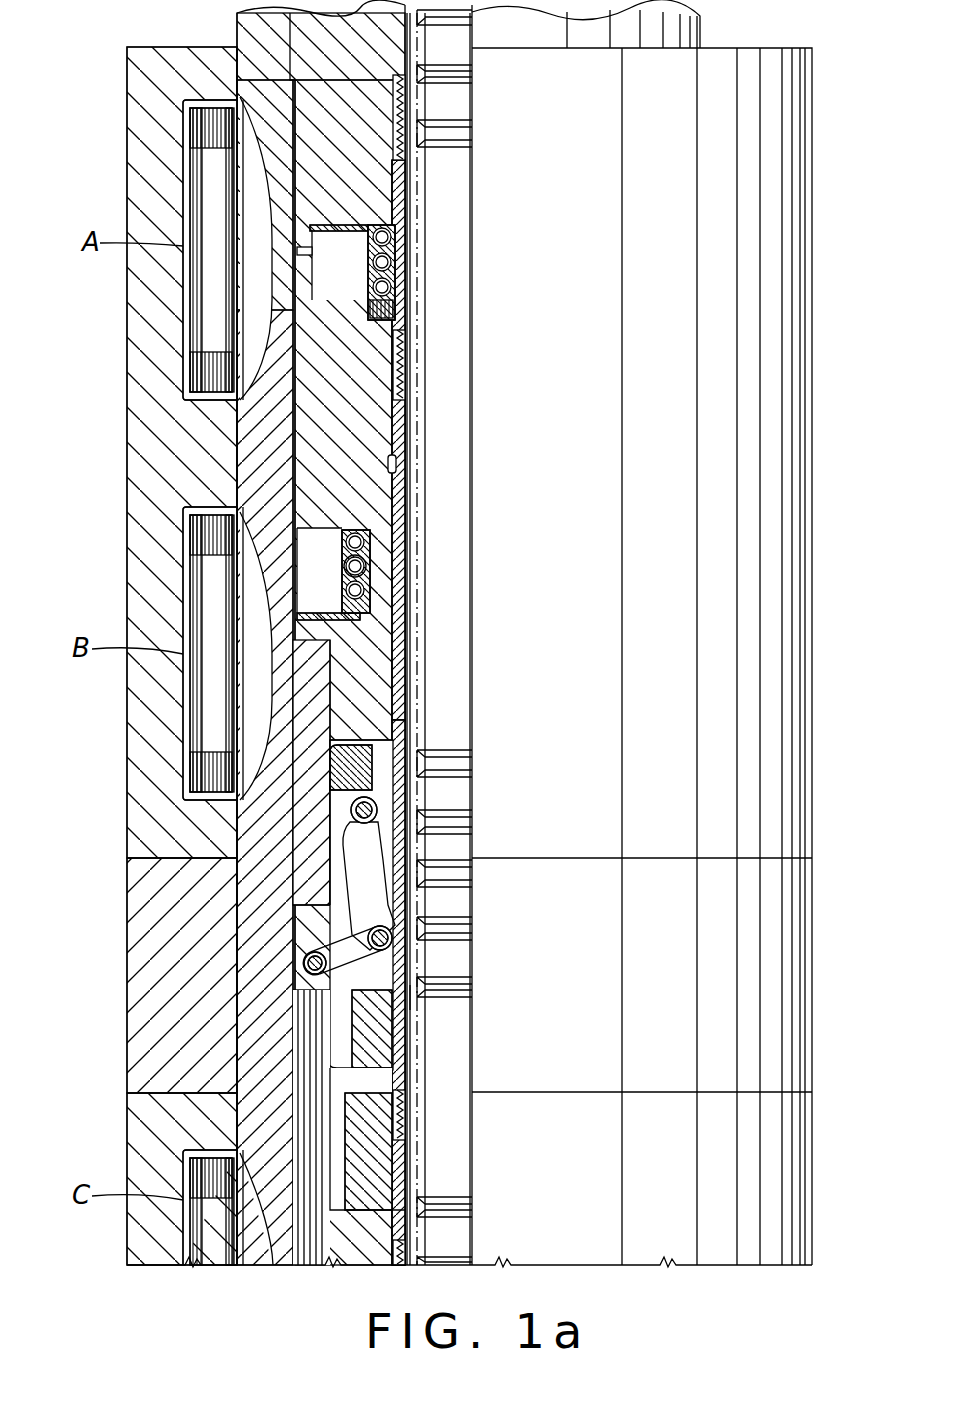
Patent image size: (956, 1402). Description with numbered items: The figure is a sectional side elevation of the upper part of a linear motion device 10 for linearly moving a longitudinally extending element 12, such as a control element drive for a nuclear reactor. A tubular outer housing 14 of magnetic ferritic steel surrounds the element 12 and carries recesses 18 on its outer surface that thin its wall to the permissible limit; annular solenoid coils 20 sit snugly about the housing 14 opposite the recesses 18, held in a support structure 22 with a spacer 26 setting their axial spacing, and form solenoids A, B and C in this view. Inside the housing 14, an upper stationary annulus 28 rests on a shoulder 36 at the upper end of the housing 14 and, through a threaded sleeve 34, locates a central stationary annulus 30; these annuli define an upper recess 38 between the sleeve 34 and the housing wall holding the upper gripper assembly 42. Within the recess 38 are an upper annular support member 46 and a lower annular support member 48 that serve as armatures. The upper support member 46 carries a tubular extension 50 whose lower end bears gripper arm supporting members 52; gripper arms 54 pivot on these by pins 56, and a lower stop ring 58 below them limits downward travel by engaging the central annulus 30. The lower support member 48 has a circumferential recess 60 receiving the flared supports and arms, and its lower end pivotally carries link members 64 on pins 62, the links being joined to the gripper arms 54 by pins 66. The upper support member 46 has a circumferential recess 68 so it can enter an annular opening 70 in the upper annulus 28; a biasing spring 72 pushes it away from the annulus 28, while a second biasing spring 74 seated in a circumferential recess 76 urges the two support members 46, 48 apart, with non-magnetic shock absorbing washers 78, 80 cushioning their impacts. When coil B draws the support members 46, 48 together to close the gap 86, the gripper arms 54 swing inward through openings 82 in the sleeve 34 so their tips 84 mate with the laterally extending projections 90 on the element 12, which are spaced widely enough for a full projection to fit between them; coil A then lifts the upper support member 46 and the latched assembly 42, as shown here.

The linear motion device 10 is at (88, 591).
The longitudinally extending element 12 is at (480, 1072).
The tubular outer housing 14 is at (160, 998).
The recesses 18 is at (262, 185).
The annular solenoid coils 20 is at (183, 330).
The support structure 22 is at (127, 720).
The spacer 26 is at (127, 942).
The upper stationary annulus 28 is at (378, 200).
The central stationary annulus 30 is at (380, 1170).
The sleeve 34 is at (398, 511).
The shoulder 36 is at (298, 76).
The upper recess 38 is at (300, 1138).
The upper gripper assembly 42 is at (396, 845).
The upper annular support member 46 is at (366, 348).
The lower annular support member 48 is at (398, 700).
The tubular extension 50 is at (386, 478).
The gripper arm supporting members 52 is at (400, 792).
The gripper arms 54 is at (386, 893).
The pins 56 is at (372, 808).
The lower stop ring 58 is at (372, 1026).
The circumferential recess 60 is at (354, 748).
The pins 62 is at (304, 964).
The link members 64 is at (318, 1000).
The pins 66 is at (392, 936).
The circumferential recess 68 is at (300, 253).
The annular opening 70 is at (313, 226).
The biasing means 72 is at (384, 288).
The second biasing means 74 is at (362, 566).
The circumferential recess 76 is at (343, 566).
The shock absorbing washer 78 is at (372, 220).
The shock absorbing washer 80 is at (304, 624).
The openings 82 is at (418, 1000).
The tips 84 is at (378, 975).
The gap 86 is at (300, 667).
The laterally extending projections 90 is at (462, 128).